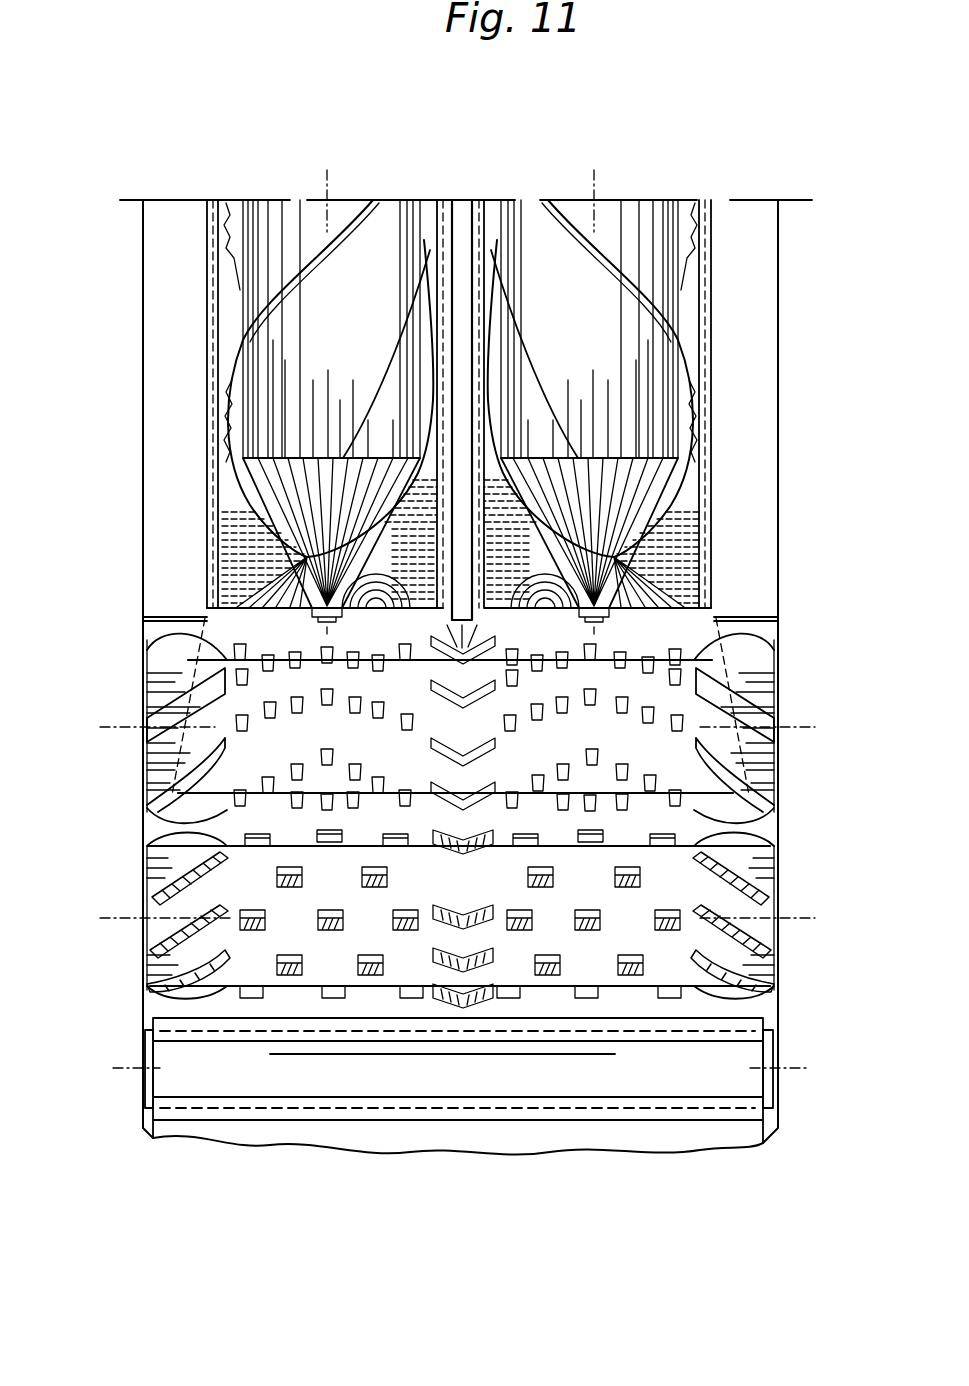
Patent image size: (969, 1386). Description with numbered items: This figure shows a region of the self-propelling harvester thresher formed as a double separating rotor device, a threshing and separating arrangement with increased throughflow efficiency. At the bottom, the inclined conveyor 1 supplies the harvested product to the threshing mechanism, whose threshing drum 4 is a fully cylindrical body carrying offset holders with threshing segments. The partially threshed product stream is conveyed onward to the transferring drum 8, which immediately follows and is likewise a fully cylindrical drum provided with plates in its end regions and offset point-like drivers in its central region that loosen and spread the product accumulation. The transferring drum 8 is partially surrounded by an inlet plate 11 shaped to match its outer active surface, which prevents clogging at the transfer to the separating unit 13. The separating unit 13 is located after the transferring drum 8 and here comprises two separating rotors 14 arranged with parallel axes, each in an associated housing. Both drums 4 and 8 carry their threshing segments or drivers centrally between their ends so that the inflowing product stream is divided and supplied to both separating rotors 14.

The inclined conveyor 1 is at (243, 1075).
The threshing drum 4 is at (185, 958).
The transferring drum 8 is at (177, 698).
The inlet plate 11 is at (153, 635).
The separating unit 13 is at (206, 245).
The separating rotor 14 is at (343, 215).